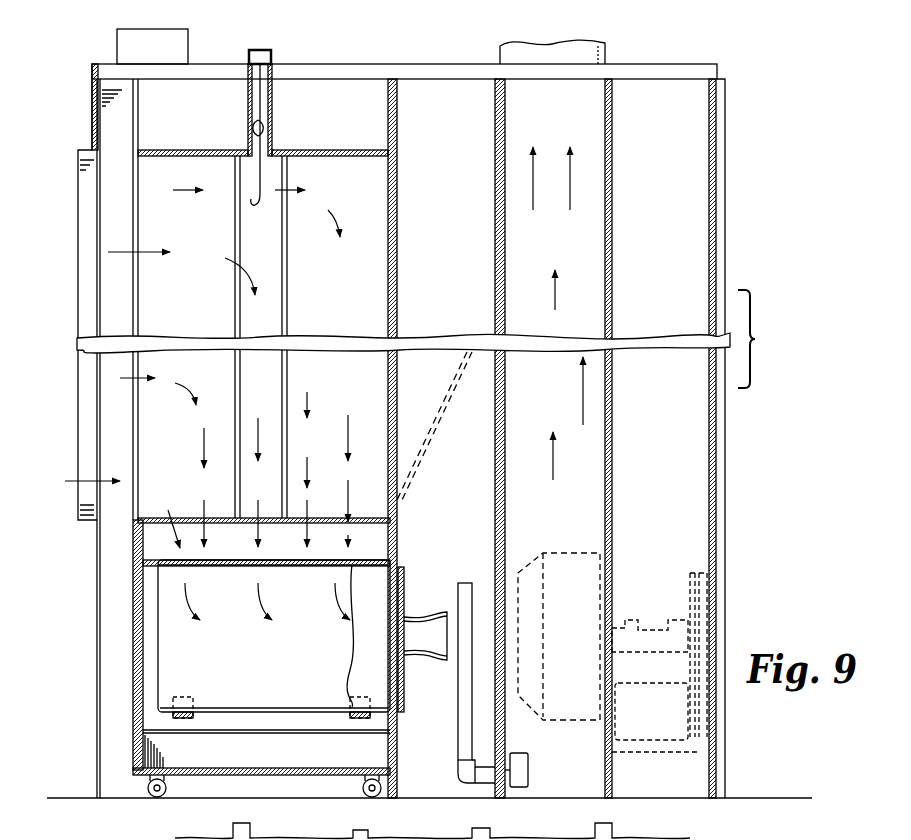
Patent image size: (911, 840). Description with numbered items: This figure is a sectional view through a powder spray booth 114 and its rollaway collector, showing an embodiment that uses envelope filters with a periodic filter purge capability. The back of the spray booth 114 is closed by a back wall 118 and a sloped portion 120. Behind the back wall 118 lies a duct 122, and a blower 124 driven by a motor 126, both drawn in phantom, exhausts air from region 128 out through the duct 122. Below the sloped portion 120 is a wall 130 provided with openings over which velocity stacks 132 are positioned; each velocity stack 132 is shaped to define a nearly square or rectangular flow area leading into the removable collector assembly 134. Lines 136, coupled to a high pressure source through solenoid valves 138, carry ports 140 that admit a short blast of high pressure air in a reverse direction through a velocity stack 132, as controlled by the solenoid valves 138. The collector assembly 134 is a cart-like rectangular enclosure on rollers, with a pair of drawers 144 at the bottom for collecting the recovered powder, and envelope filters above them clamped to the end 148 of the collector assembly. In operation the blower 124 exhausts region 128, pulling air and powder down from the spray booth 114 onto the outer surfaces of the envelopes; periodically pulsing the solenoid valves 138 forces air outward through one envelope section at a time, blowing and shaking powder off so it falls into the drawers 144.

The spray booth 114 is at (74, 140).
The back wall 118 is at (496, 263).
The sloped portion 120 is at (432, 434).
The duct 122 is at (608, 60).
The blower 124 is at (601, 541).
The motor 126 is at (700, 745).
The region 128 is at (478, 507).
The wall 130 is at (397, 535).
The velocity stack 132 is at (426, 657).
The removable collector assembly 134 is at (132, 675).
The line 136 is at (462, 718).
The solenoid valve 138 is at (527, 755).
The port 140 is at (460, 637).
The drawer 144 is at (147, 748).
The end of the collector assembly 148 is at (392, 557).